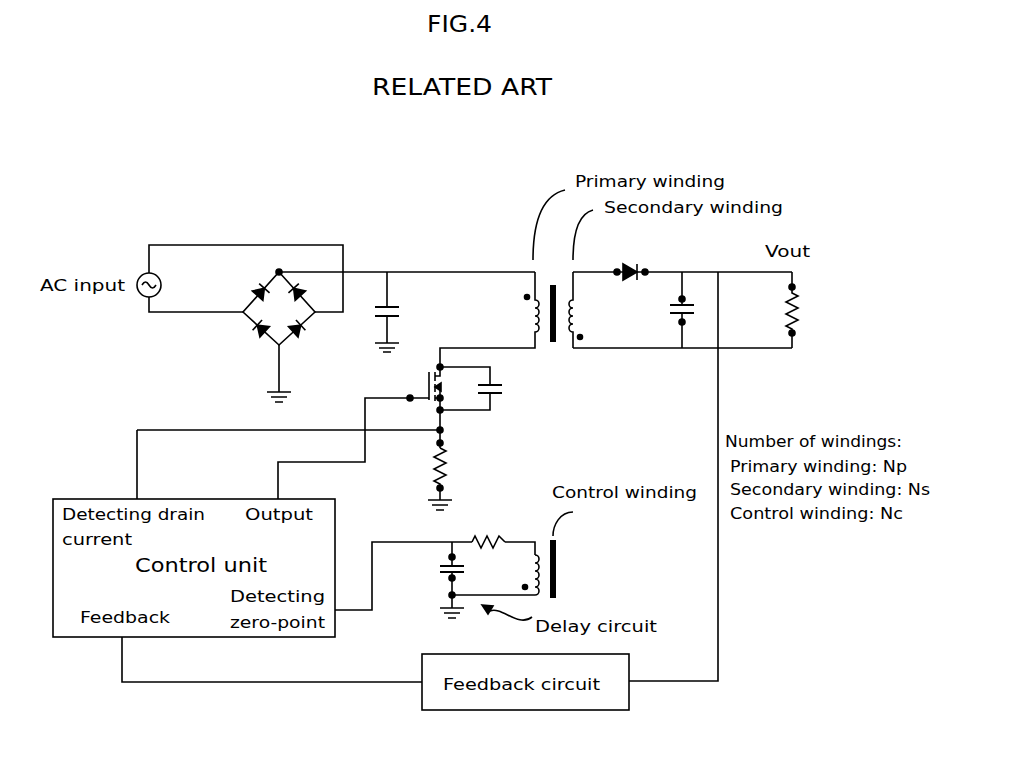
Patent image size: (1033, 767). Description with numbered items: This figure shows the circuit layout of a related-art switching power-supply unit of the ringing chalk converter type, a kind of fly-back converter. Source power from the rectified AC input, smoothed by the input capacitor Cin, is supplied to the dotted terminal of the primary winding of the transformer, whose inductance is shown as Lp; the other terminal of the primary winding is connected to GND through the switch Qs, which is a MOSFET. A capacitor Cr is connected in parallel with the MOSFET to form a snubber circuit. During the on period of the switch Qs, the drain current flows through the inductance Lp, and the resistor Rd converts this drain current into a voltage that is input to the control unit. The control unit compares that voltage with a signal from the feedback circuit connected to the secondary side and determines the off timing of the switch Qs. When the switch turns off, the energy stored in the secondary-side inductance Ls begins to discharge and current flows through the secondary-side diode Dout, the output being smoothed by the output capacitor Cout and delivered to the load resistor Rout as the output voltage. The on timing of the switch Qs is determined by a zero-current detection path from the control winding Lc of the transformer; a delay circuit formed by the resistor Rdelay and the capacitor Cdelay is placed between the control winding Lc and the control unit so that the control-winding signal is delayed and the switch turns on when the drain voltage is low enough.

The input capacitor Cin is at (405, 312).
The inductance of the primary side of the transformer Lp is at (489, 319).
The inductance of the secondary side of the transformer Ls is at (588, 310).
The diode of the secondary side Dout is at (634, 261).
The output capacitor Cout is at (661, 310).
The output load resistor Rout is at (818, 310).
The switch Qs is at (420, 382).
The capacitor Cr is at (486, 390).
The resistor Rd is at (456, 475).
The delay resistor Rdelay is at (499, 533).
The delay capacitor Cdelay is at (420, 576).
The control winding Lc is at (526, 569).